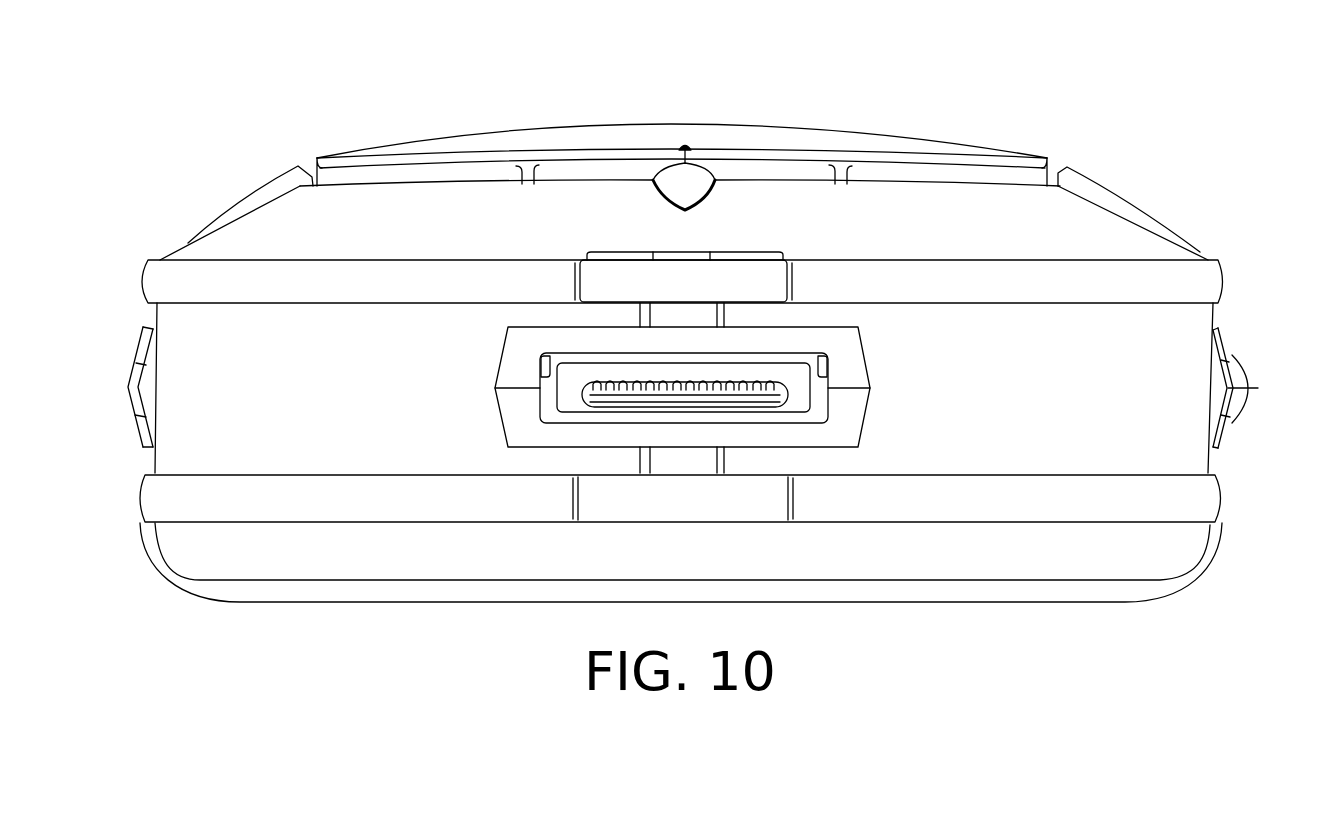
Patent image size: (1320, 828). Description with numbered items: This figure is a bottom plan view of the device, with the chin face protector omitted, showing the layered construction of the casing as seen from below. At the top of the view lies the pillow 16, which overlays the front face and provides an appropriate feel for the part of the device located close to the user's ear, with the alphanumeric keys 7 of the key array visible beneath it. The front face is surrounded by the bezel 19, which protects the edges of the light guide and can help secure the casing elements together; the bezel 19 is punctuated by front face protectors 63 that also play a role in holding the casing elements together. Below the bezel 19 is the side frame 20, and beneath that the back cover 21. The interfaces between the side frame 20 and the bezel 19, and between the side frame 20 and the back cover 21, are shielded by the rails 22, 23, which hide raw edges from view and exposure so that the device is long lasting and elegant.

The alphanumeric keys 7 is at (418, 167).
The pillow 16 is at (806, 137).
The bezel 19 is at (1163, 244).
The side frame 20 is at (145, 470).
The back cover 21 is at (296, 612).
The rail 22 is at (1213, 282).
The rail 23 is at (1210, 500).
The front face protectors 63 is at (272, 187).